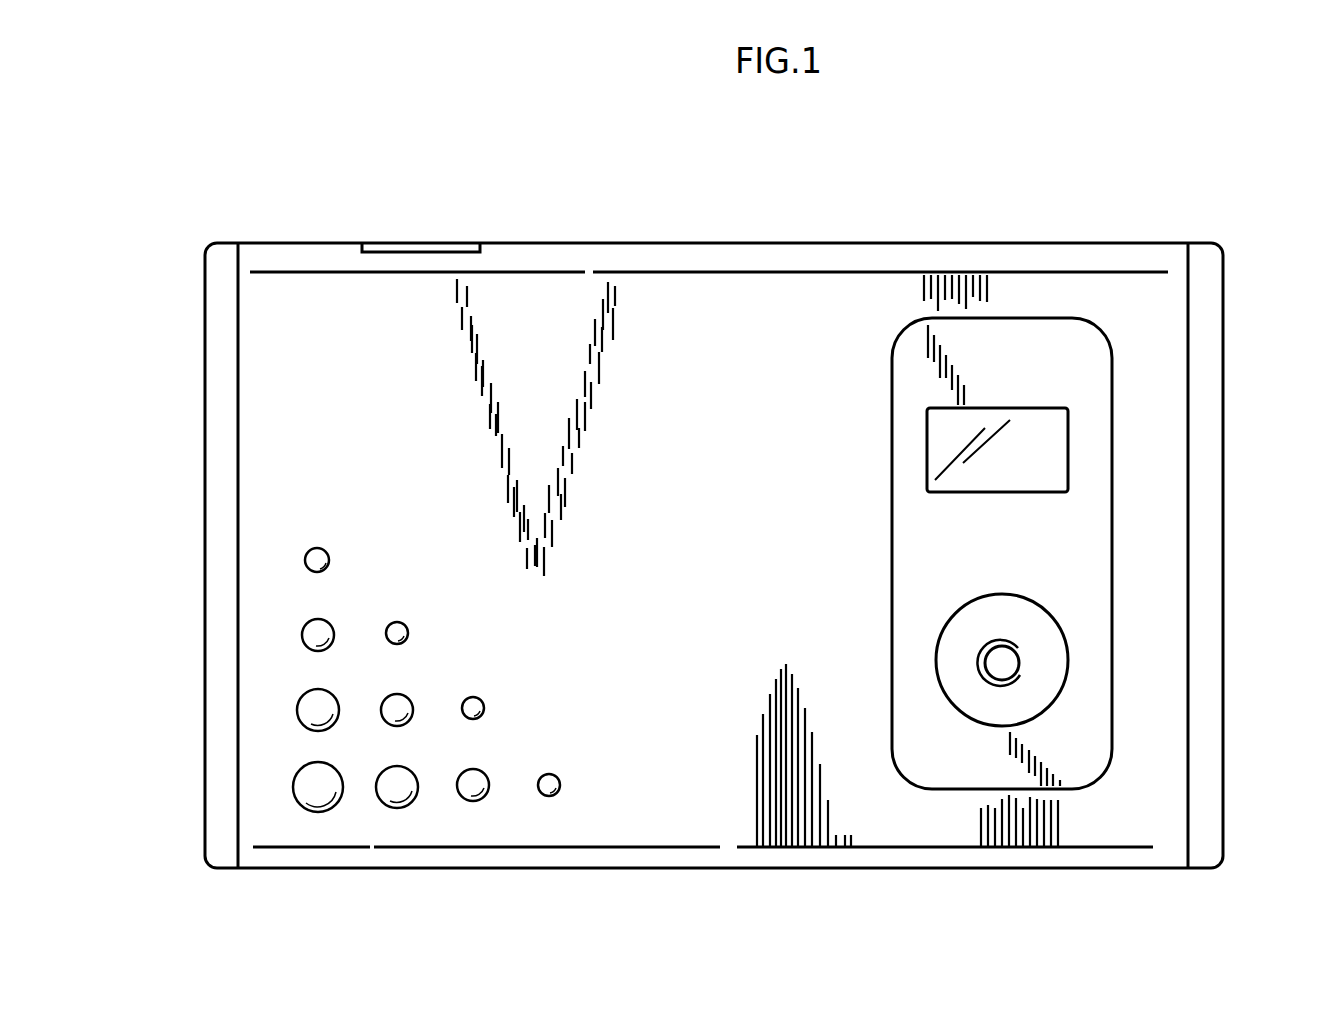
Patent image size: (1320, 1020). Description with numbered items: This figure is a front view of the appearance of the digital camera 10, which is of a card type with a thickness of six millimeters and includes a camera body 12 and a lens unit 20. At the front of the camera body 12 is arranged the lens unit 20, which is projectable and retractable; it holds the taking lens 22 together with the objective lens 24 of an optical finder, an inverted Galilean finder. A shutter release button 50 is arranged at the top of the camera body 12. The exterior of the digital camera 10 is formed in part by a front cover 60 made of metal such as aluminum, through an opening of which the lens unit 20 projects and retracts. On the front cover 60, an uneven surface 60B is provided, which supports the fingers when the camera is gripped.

The digital camera 10 is at (1188, 216).
The camera body 12 is at (907, 243).
The lens unit 20 is at (1113, 377).
The taking lens 22 is at (1008, 660).
The objective lens 24 is at (1047, 463).
The shutter release button 50 is at (432, 242).
The front cover 60 is at (682, 803).
The uneven surface 60B is at (300, 780).